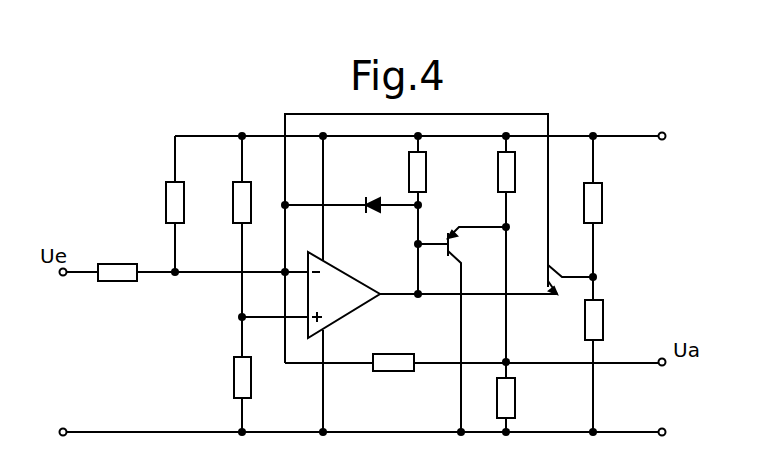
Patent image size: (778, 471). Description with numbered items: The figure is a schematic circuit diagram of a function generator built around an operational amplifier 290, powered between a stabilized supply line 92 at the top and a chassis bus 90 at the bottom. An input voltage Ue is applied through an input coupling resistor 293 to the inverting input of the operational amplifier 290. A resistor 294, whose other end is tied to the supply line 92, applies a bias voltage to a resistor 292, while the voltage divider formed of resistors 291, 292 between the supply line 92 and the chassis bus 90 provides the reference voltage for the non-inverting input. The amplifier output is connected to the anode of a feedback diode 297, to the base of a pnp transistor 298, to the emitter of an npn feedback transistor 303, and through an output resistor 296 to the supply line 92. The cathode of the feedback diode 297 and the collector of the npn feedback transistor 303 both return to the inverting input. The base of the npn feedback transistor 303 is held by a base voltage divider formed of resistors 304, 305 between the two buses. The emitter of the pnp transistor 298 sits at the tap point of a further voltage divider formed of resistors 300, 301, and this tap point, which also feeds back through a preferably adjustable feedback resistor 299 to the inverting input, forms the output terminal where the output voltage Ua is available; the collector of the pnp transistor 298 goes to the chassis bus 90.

The chassis bus 90 is at (342, 434).
The stabilized supply line 92 is at (195, 136).
The operational amplifier 290 is at (350, 301).
The resistor 291 is at (233, 208).
The resistor 292 is at (233, 385).
The input coupling resistor 293 is at (110, 268).
The resistor 294 is at (167, 196).
The output resistor 296 is at (424, 170).
The feedback diode 297 is at (372, 200).
The pnp transistor 298 is at (455, 254).
The feedback resistor 299 is at (385, 372).
The resistor 300 is at (502, 178).
The resistor 301 is at (516, 392).
The npn feedback transistor 303 is at (548, 262).
The resistor 304 is at (602, 198).
The resistor 305 is at (603, 318).